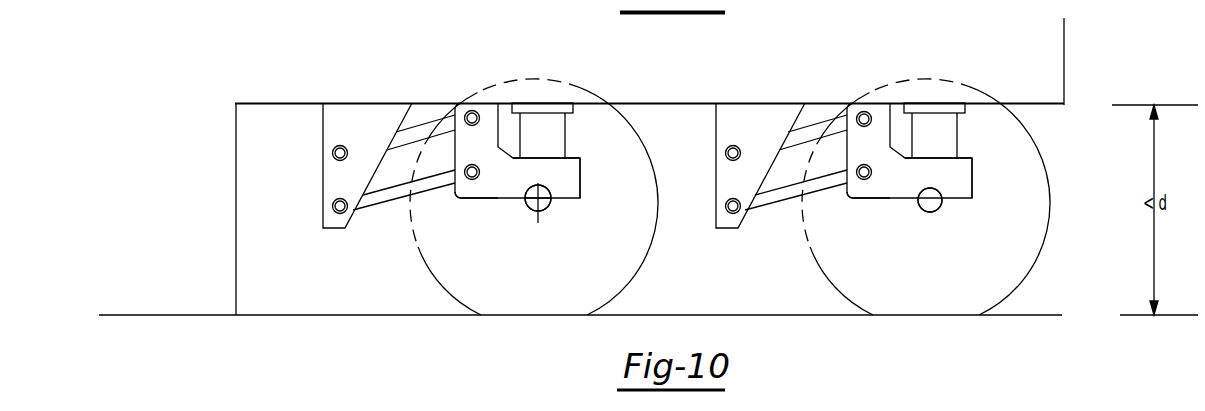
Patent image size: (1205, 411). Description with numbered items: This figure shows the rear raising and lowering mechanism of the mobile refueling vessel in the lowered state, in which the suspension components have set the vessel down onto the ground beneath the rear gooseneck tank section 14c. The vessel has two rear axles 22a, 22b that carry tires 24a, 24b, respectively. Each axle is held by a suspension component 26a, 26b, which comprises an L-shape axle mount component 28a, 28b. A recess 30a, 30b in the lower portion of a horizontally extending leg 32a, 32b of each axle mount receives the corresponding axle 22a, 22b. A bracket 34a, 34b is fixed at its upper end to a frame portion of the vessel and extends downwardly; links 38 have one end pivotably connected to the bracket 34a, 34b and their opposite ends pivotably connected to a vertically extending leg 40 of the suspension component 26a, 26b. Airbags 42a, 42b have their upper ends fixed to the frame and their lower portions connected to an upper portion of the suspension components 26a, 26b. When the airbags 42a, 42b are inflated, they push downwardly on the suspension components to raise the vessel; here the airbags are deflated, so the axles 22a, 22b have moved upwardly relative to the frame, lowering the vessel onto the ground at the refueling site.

The rear gooseneck tank section 14c is at (1057, 68).
The rear axle 22a is at (528, 210).
The rear axle 22b is at (928, 210).
The tire 24a is at (630, 280).
The tire 24b is at (1022, 282).
The suspension component 26a is at (480, 103).
The suspension component 26b is at (876, 105).
The L-shape axle mount component 28a is at (565, 175).
The L-shape axle mount component 28b is at (957, 175).
The recess 30a is at (540, 193).
The recess 30b is at (932, 193).
The horizontally extending leg 32a is at (507, 192).
The horizontally extending leg 32b is at (898, 190).
The bracket 34a is at (377, 135).
The bracket 34b is at (768, 134).
The links 38 is at (453, 122).
The vertically extending leg 40 is at (473, 137).
The airbag 42a is at (556, 141).
The airbag 42b is at (950, 141).